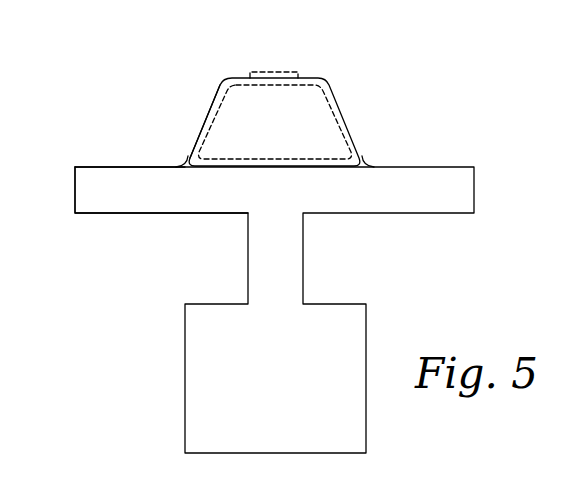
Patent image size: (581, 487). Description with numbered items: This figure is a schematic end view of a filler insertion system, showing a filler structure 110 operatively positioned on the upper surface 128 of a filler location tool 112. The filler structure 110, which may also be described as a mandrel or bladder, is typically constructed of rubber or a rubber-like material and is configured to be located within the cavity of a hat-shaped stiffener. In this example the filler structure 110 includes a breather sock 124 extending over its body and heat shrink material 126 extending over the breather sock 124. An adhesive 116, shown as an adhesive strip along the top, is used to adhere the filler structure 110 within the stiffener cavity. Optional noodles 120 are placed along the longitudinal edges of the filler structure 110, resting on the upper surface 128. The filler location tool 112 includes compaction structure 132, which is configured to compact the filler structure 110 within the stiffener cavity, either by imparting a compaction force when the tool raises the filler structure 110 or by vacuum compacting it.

The filler structure 110 is at (373, 166).
The filler location tool 112 is at (424, 164).
The adhesive 116 is at (279, 72).
The noodles 120 is at (179, 162).
The breather sock 124 is at (198, 122).
The heat shrink material 126 is at (204, 117).
The upper surface 128 is at (97, 166).
The compaction structure 132 is at (157, 193).